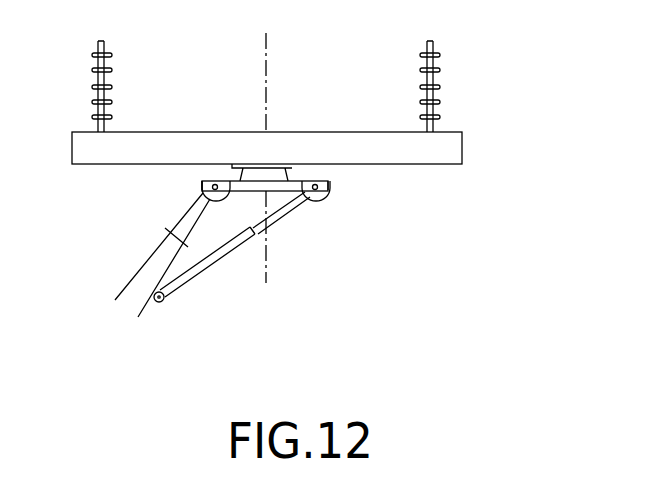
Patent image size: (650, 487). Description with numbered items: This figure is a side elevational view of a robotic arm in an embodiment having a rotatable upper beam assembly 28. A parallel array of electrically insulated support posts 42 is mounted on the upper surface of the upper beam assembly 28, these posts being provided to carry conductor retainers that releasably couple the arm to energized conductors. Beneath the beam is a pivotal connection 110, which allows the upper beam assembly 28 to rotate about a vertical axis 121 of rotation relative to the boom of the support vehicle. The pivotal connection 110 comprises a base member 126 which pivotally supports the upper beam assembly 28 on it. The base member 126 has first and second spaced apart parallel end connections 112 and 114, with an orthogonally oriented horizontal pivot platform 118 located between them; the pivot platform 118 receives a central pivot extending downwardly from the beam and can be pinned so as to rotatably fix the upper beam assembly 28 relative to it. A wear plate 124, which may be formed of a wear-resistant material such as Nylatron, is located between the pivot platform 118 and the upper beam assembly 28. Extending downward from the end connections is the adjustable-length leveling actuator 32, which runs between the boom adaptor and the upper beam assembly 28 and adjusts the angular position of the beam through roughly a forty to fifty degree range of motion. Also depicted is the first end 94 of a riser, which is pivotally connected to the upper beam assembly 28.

The vertical axis of rotation 121 is at (266, 47).
The upper beam assembly 28 is at (300, 133).
The electrically insulated support posts 42 is at (103, 81).
The wear plate 124 is at (292, 164).
The pivot platform 118 is at (292, 167).
The pivotal connection 110 is at (173, 179).
The first end connection 112 is at (203, 194).
The second end connection 114 is at (328, 193).
The first end of riser 94 is at (147, 253).
The base member 126 is at (293, 199).
The leveling actuator 32 is at (225, 262).